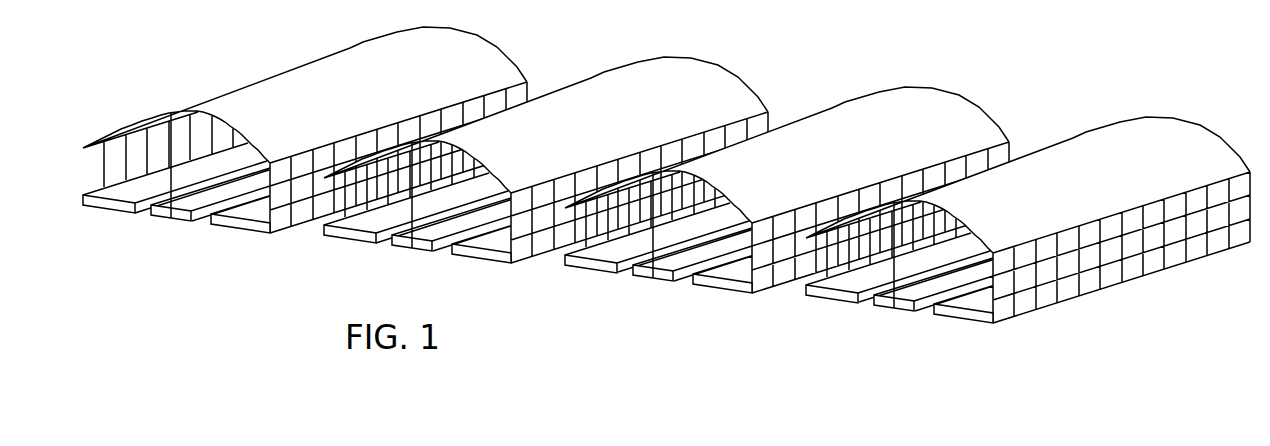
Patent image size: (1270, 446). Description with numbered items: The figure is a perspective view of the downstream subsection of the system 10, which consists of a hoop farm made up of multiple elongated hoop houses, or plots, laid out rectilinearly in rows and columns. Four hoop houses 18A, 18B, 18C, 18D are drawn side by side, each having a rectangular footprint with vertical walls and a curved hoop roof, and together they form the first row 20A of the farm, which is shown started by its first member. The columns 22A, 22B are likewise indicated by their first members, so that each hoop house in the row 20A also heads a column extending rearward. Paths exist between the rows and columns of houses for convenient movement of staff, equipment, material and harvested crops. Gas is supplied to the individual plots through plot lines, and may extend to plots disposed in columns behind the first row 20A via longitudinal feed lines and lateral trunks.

The system 10 is at (666, 231).
The hoop house 18A is at (1028, 244).
The hoop house 18B is at (858, 164).
The hoop house 18C is at (615, 133).
The hoop house 18D is at (372, 100).
The row 20A is at (1142, 302).
The column 22A is at (890, 357).
The column 22B is at (605, 305).